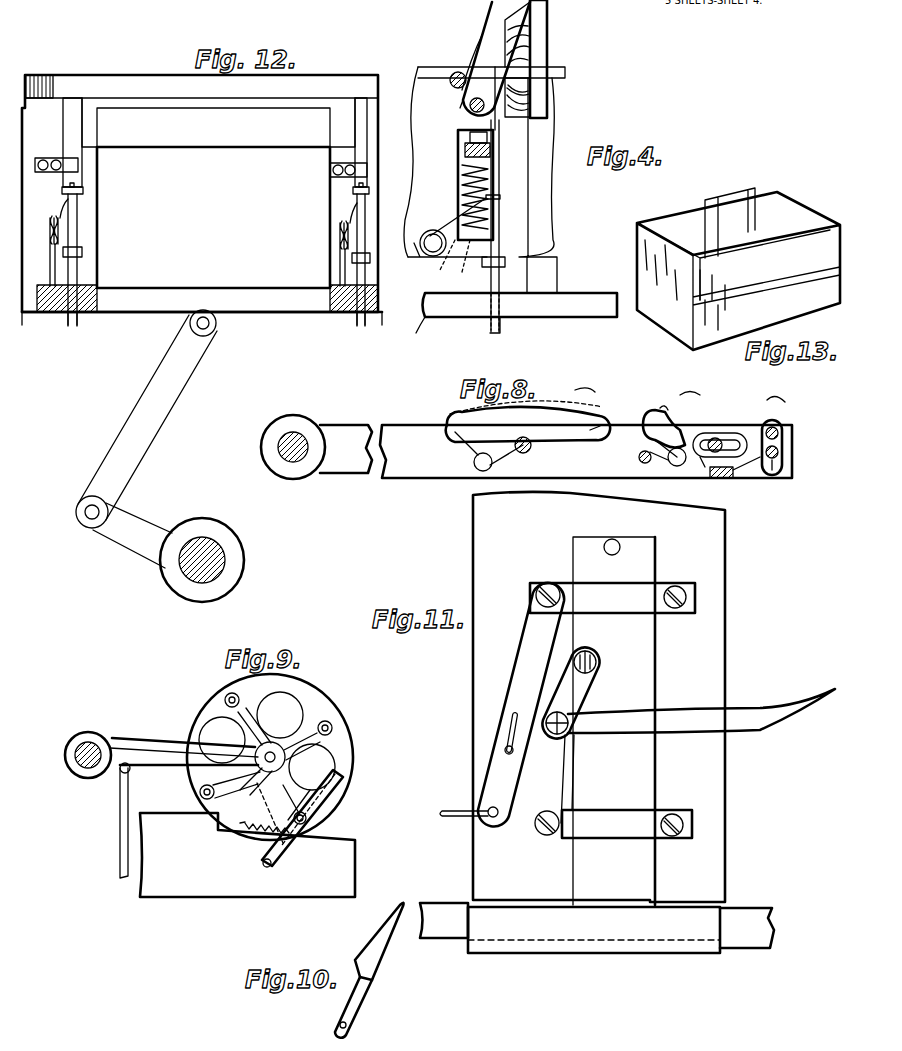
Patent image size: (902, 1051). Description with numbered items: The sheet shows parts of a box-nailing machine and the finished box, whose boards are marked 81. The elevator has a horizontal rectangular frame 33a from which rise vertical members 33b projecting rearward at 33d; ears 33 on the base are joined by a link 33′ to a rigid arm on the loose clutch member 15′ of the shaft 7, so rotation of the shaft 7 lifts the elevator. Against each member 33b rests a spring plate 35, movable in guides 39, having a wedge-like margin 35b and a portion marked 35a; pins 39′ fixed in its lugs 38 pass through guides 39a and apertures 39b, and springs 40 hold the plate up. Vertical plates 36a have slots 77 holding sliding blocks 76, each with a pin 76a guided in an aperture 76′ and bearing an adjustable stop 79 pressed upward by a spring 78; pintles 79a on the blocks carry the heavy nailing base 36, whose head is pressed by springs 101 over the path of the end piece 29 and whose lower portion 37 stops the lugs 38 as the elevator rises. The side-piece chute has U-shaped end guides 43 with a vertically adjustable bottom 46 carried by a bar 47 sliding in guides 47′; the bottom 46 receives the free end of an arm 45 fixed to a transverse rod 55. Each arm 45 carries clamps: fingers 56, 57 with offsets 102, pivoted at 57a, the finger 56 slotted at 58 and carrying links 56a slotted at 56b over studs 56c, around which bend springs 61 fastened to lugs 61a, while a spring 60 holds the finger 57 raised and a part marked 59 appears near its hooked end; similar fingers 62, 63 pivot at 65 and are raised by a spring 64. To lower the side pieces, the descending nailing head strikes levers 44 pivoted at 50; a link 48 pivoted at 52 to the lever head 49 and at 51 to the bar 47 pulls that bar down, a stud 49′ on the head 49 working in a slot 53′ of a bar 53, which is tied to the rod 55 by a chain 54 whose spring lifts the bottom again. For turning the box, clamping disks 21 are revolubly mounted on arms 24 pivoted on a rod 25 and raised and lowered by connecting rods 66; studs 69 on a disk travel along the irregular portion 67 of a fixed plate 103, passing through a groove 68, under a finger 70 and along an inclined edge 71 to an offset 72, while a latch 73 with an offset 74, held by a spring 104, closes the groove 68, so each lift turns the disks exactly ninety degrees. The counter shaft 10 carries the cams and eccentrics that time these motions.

In FIG. 12, the spring plate 35 is at (200, 193).
In FIG. 12, the inverted U frame 35a is at (82, 140).
In FIG. 12, the vertical members 33b is at (233, 146).
In FIG. 4, the vertical members 33b is at (557, 270).
In FIG. 12, the horizontal rectangular frame 33a is at (202, 298).
In FIG. 4, the horizontal rectangular frame 33a is at (520, 303).
In FIG. 12, the guides 39 is at (66, 160).
In FIG. 4, the guides 39 is at (500, 165).
In FIG. 12, the lugs 38 is at (83, 190).
In FIG. 4, the lugs 38 is at (500, 196).
In FIG. 12, the pins 39′ is at (78, 210).
In FIG. 4, the pins 39′ is at (501, 335).
In FIG. 12, the guides 39a is at (82, 252).
In FIG. 4, the guides 39a is at (482, 262).
In FIG. 12, the springs 40 is at (52, 226).
In FIG. 12, the rear projections of vertical members 33d is at (32, 318).
In FIG. 4, the rear projections of vertical members 33d is at (408, 329).
In FIG. 12, the apertures 39b is at (84, 318).
In FIG. 4, the apertures 39b is at (482, 320).
In FIG. 12, the ears 33 is at (218, 326).
In FIG. 12, the link 33′ is at (146, 421).
In FIG. 12, the loose clutch member 15′ is at (215, 525).
In FIG. 12, the shaft 7 is at (220, 550).
In FIG. 4, the chain 54 is at (547, 48).
In FIG. 11, the chain 54 is at (470, 817).
In FIG. 4, the nailing base 36 is at (496, 58).
In FIG. 4, the springs 101 is at (478, 56).
In FIG. 4, the sliding block 76 is at (470, 103).
In FIG. 4, the lower portions of nailing bases 37 is at (477, 115).
In FIG. 4, the wedge-like margins 35b is at (565, 74).
In FIG. 4, the end piece 29 is at (530, 98).
In FIG. 13, the end piece 29 is at (750, 196).
In FIG. 4, the pintle 79a is at (428, 108).
In FIG. 4, the vertical plates 36a is at (566, 218).
In FIG. 4, the transverse rod 55 is at (505, 138).
In FIG. 8, the transverse rod 55 is at (280, 450).
In FIG. 4, the vertical slots 77 is at (460, 203).
In FIG. 4, the stop 79 is at (470, 137).
In FIG. 4, the spring 78 is at (465, 150).
In FIG. 4, the counter shaft 10 is at (430, 233).
In FIG. 4, the aperture 76′ is at (422, 259).
In FIG. 4, the pin 76a is at (465, 262).
In FIG. 13, the slat 81 is at (738, 271).
In FIG. 8, the arm 45 is at (526, 447).
In FIG. 11, the arm 45 is at (597, 925).
In FIG. 8, the finger 62 is at (528, 430).
In FIG. 8, the finger 63 is at (588, 428).
In FIG. 8, the pivot 65 is at (535, 420).
In FIG. 8, the spring 64 is at (481, 451).
In FIG. 8, the offsets 102 is at (680, 391).
In FIG. 8, the finger 57 is at (673, 420).
In FIG. 8, the hook 59 is at (652, 408).
In FIG. 8, the spring 60 is at (660, 466).
In FIG. 8, the slot 58 is at (720, 436).
In FIG. 8, the pivot 57a is at (712, 460).
In FIG. 8, the finger 56 is at (762, 430).
In FIG. 8, the links 56a is at (780, 430).
In FIG. 8, the studs 56c is at (782, 452).
In FIG. 8, the slot 56b is at (775, 475).
In FIG. 8, the spring 61 is at (740, 474).
In FIG. 8, the lugs 61a is at (730, 480).
In FIG. 11, the U-shaped end guides 43 is at (599, 697).
In FIG. 11, the bar 47 is at (614, 721).
In FIG. 11, the guides 47′ is at (612, 710).
In FIG. 11, the bar 53 is at (521, 705).
In FIG. 11, the slot 53′ is at (520, 720).
In FIG. 11, the stud 49′ is at (505, 748).
In FIG. 11, the head 49 is at (520, 785).
In FIG. 11, the link 48 is at (570, 735).
In FIG. 11, the pivot 51 is at (592, 657).
In FIG. 11, the pivot 52 is at (568, 724).
In FIG. 11, the lever 44 is at (701, 711).
In FIG. 11, the pivot 50 is at (540, 835).
In FIG. 11, the vertically adjustable bottom 46 is at (594, 930).
In FIG. 9, the clamping disks 21 is at (270, 757).
In FIG. 9, the studs 69 is at (225, 700).
In FIG. 9, the cylindrical rod 25 is at (88, 742).
In FIG. 9, the arms 24 is at (184, 751).
In FIG. 9, the connecting rods 66 is at (120, 832).
In FIG. 9, the inclined edge 71 is at (226, 785).
In FIG. 9, the offset 72 is at (197, 798).
In FIG. 9, the groove 68 is at (292, 800).
In FIG. 9, the irregular portion 67 is at (286, 809).
In FIG. 9, the latch 73 is at (322, 805).
In FIG. 10, the latch 73 is at (368, 945).
In FIG. 9, the offset 74 is at (300, 830).
In FIG. 10, the offset 74 is at (345, 982).
In FIG. 9, the projecting finger 70 is at (228, 823).
In FIG. 9, the spring 104 is at (245, 840).
In FIG. 9, the plate 103 is at (247, 855).